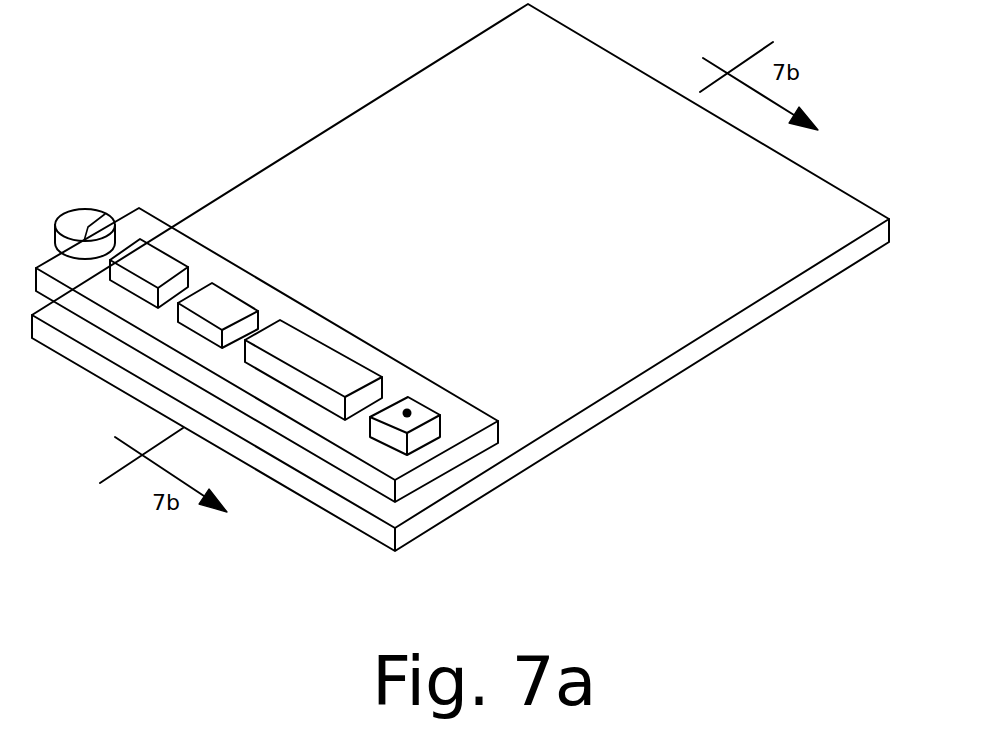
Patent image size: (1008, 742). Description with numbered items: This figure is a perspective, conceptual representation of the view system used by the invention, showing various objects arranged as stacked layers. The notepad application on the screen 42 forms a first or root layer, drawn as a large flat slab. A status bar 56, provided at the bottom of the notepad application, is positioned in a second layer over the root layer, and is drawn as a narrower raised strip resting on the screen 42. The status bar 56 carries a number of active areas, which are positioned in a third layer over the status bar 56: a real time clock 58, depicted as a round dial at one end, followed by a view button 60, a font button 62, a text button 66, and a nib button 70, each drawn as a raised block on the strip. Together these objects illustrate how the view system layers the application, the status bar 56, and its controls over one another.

The screen 42 is at (600, 372).
The status bar 56 is at (480, 424).
The real time clock 58 is at (100, 222).
The view button 60 is at (151, 243).
The font button 62 is at (215, 289).
The text button 66 is at (330, 352).
The nib button 70 is at (404, 398).